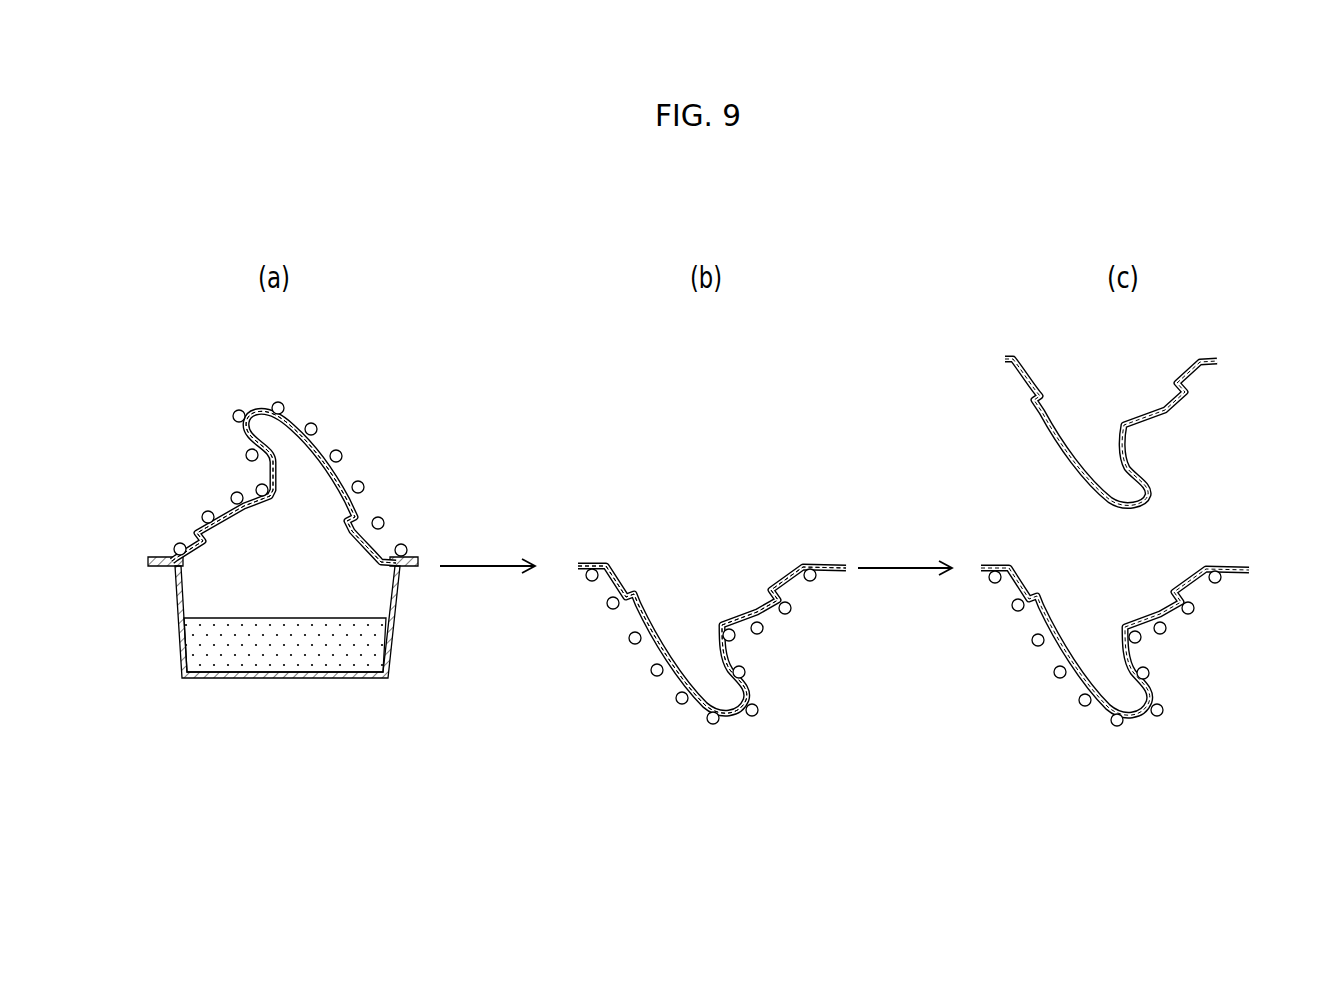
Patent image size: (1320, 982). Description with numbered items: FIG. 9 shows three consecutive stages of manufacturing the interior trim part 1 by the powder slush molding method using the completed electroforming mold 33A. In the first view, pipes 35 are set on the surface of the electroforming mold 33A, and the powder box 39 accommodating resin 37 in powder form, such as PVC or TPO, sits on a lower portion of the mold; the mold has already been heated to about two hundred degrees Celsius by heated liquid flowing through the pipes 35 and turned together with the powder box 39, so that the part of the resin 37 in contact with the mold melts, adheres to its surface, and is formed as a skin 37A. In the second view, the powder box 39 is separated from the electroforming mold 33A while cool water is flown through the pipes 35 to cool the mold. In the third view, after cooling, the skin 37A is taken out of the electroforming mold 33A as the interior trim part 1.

The interior trim part 1 is at (1104, 498).
The electroforming mold 33A is at (255, 408).
The pipes 35 is at (342, 457).
The resin 37 is at (322, 662).
The skin 37A is at (247, 506).
The powder box 39 is at (245, 680).